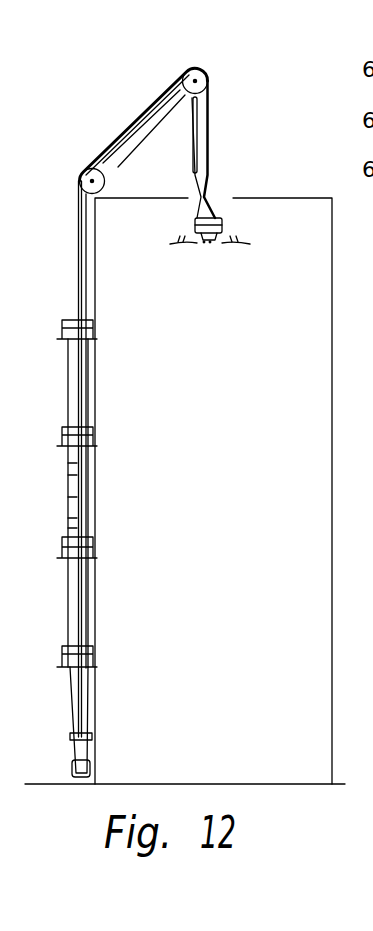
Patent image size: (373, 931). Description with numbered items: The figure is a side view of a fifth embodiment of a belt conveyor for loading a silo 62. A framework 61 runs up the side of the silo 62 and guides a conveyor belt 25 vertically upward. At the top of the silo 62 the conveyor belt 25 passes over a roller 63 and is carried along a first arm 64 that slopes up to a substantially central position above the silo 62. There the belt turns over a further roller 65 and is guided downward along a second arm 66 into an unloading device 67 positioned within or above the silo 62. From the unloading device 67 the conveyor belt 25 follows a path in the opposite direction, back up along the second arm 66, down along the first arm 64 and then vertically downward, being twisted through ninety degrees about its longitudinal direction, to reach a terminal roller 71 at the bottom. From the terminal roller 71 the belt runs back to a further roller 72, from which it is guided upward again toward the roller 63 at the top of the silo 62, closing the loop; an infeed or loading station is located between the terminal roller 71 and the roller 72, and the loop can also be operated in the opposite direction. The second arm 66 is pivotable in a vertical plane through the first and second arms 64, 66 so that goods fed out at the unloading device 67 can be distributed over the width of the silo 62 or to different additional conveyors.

The conveyor belt 25 is at (80, 265).
The framework 61 is at (70, 487).
The silo 62 is at (241, 365).
The roller 63 is at (83, 191).
The first arm 64 is at (133, 134).
The roller 65 is at (210, 66).
The second arm 66 is at (211, 122).
The unloading device 67 is at (220, 214).
The terminal roller 71 is at (75, 773).
The further roller 72 is at (74, 737).